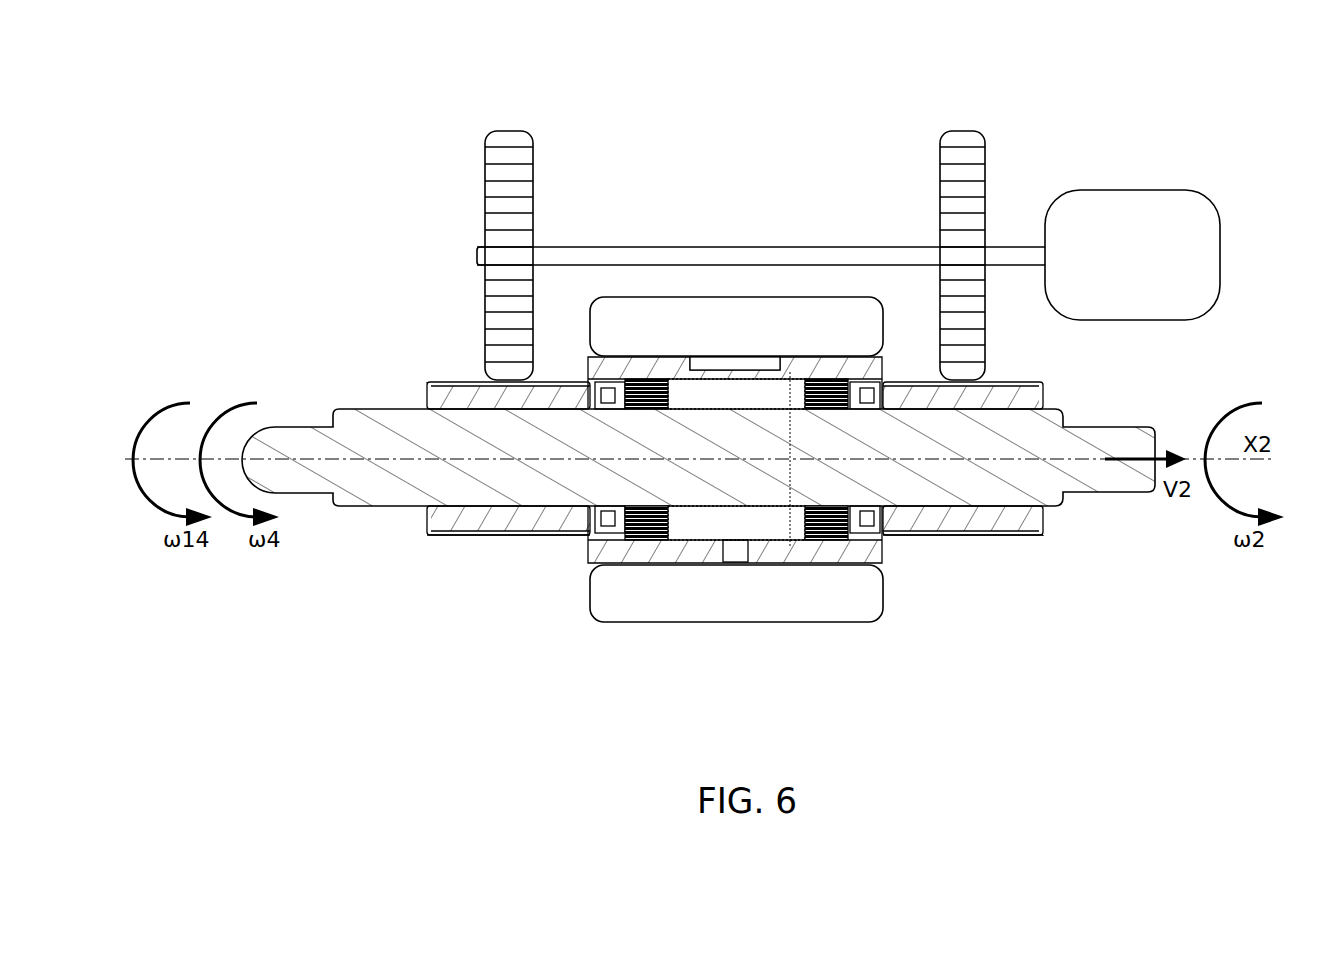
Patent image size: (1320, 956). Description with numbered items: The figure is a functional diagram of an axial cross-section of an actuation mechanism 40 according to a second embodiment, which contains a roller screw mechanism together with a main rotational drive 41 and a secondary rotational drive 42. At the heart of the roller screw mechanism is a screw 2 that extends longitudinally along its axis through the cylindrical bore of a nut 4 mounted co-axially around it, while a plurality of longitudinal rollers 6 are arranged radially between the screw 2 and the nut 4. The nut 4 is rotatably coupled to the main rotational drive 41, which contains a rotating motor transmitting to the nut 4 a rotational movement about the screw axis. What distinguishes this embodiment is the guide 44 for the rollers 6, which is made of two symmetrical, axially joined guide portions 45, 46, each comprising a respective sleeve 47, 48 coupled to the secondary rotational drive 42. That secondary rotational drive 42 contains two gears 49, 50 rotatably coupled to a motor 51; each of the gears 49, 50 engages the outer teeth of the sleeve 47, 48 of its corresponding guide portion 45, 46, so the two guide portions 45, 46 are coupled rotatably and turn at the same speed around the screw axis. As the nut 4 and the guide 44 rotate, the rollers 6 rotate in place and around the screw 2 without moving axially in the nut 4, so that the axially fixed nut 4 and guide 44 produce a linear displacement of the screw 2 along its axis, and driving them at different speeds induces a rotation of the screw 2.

The screw 2 is at (1078, 506).
The nut 4 is at (805, 540).
The rollers 6 is at (762, 520).
The actuation mechanism 40 is at (430, 292).
The main rotational drive 41 is at (697, 585).
The secondary rotational drive 42 is at (848, 228).
The guide 44 is at (701, 517).
The guide portion 45 is at (548, 522).
The guide portion 46 is at (1008, 522).
The sleeve 47 is at (478, 538).
The sleeve 48 is at (936, 540).
The gear 49 is at (512, 140).
The gear 50 is at (962, 140).
The motor 51 is at (1120, 208).